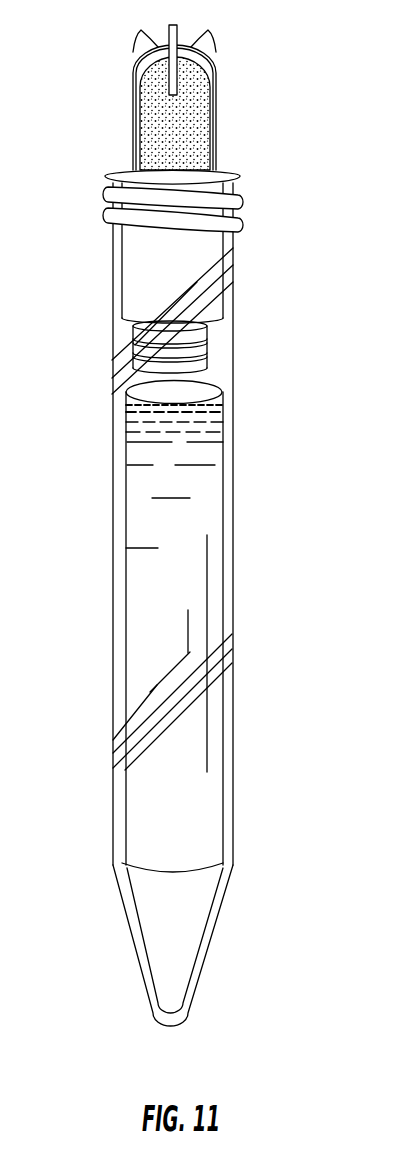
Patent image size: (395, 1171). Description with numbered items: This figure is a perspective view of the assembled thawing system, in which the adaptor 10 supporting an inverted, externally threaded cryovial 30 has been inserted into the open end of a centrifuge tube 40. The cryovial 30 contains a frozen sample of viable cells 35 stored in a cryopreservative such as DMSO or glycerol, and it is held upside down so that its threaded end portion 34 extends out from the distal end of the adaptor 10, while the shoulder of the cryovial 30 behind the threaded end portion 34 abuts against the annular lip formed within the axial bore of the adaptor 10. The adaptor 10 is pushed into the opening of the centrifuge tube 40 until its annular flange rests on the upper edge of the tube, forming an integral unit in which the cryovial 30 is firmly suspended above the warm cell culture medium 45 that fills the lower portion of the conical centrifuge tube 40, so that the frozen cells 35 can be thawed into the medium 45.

The adaptor 10 is at (122, 254).
The cryovial 30 is at (227, 100).
The threaded end portion 34 is at (207, 350).
The frozen sample of viable cells 35 is at (150, 118).
The centrifuge tube 40 is at (233, 498).
The warm cell culture medium 45 is at (182, 927).